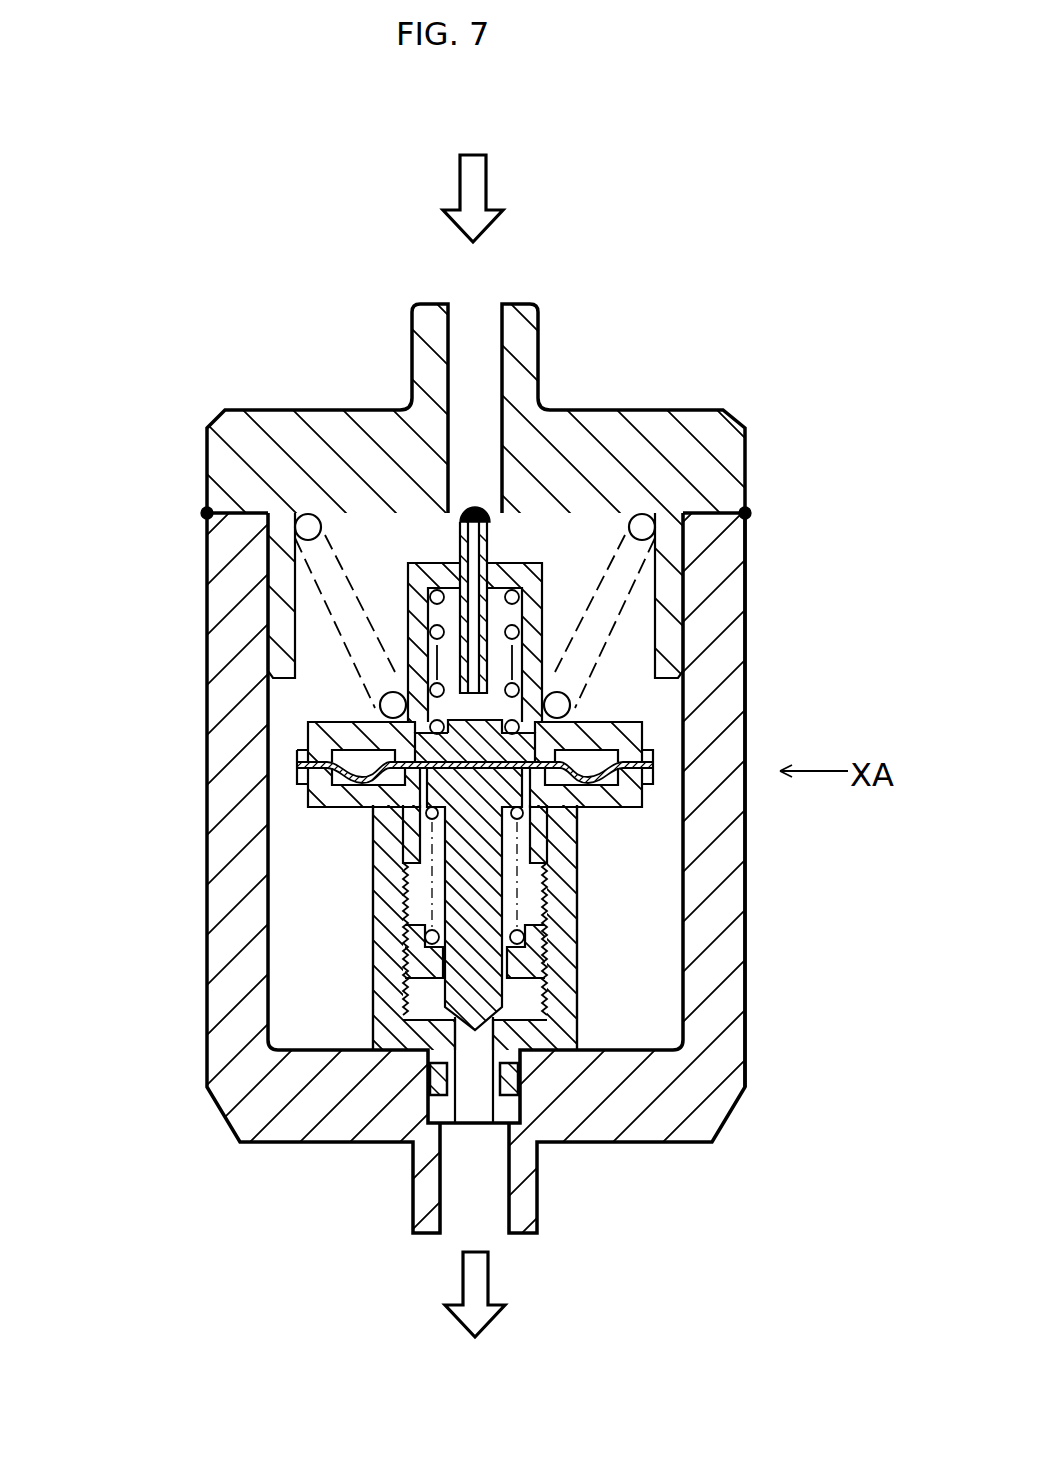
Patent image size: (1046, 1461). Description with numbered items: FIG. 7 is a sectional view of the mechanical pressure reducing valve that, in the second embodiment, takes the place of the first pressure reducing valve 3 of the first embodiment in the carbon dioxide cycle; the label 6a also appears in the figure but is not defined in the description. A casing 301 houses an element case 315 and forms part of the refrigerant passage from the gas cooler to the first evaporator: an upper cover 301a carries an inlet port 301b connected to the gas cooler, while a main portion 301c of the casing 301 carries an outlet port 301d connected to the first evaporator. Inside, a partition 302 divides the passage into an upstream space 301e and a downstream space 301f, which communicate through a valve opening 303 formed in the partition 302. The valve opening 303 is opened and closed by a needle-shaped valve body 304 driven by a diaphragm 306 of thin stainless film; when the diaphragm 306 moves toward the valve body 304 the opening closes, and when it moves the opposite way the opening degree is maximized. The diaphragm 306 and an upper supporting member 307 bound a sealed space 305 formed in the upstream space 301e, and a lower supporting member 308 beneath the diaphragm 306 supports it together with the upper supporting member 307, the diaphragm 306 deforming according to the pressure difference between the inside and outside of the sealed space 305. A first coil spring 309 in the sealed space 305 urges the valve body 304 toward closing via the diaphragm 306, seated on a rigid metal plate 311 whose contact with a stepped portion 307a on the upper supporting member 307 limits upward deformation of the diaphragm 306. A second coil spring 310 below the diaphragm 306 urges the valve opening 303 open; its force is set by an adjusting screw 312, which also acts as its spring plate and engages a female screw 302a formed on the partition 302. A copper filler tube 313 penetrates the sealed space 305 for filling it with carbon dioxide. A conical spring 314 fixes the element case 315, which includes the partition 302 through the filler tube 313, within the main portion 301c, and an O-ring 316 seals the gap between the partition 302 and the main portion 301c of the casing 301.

The first pressure reducing valve 3 is at (778, 406).
The chamber 6a is at (635, 860).
The casing 301 is at (764, 904).
The upper cover 301a is at (690, 465).
The inlet port 301b is at (470, 327).
The main portion 301c is at (745, 712).
The outlet port 301d is at (482, 1222).
The upstream space 301e is at (640, 1010).
The downstream space 301f is at (440, 1127).
The partition 302 is at (385, 965).
The female screw 302a is at (545, 905).
The valve opening 303 is at (477, 1042).
The needle-shaped valve body 304 is at (472, 880).
The sealed space 305 is at (410, 635).
The diaphragm 306 is at (640, 795).
The upper supporting member 307 is at (360, 735).
The stepped portion 307a is at (380, 705).
The lower supporting member 308 is at (305, 765).
The first coil spring 309 is at (572, 630).
The second coil spring 310 is at (412, 870).
The metal plate 311 is at (437, 650).
The adjusting screw 312 is at (428, 1078).
The filler tube 313 is at (478, 548).
The conical spring 314 is at (625, 595).
The element case 315 is at (350, 932).
The O-ring 316 is at (523, 1085).